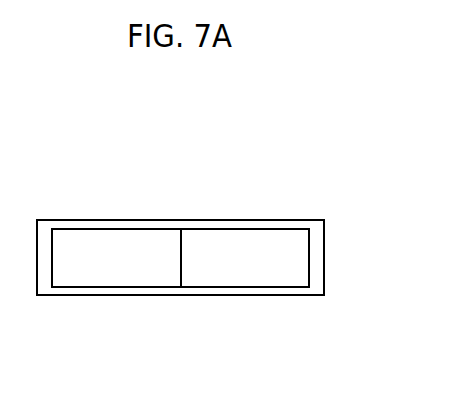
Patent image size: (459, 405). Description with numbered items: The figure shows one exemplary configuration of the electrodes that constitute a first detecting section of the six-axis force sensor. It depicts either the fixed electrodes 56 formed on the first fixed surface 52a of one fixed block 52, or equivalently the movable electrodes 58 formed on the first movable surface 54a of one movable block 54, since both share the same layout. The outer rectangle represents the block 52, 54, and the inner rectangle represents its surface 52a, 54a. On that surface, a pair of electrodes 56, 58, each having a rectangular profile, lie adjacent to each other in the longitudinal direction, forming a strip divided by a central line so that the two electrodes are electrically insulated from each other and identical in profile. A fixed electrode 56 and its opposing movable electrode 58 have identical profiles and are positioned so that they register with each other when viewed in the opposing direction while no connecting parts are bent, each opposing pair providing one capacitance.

The fixed block 52 is at (180, 296).
The movable block 54 is at (245, 295).
The first fixed surface 52a is at (366, 263).
The first movable surface 54a is at (315, 279).
The fixed electrode 56 is at (180, 219).
The movable electrode 58 is at (140, 243).